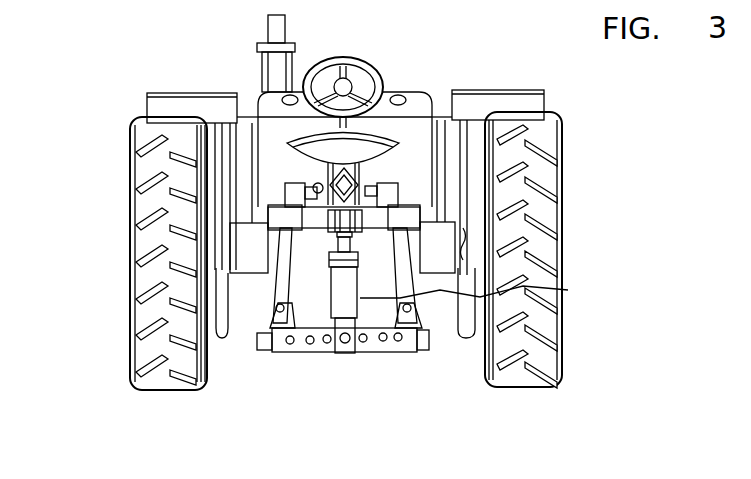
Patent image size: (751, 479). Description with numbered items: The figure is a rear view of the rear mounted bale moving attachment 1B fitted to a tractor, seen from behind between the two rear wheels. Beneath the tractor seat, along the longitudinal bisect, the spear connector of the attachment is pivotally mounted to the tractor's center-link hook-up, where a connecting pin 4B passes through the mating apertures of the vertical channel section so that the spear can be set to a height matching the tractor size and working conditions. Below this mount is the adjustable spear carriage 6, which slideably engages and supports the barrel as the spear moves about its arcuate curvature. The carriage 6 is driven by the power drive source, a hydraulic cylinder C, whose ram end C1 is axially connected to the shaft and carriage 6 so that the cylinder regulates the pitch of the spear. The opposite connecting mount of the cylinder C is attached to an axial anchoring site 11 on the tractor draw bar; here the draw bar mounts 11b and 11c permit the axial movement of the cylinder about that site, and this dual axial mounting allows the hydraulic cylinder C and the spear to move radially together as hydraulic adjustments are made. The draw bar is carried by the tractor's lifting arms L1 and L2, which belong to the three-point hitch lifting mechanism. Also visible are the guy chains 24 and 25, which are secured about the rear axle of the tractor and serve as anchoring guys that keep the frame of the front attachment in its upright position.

The rear mounted bale moving attachment 1B is at (316, 172).
The adjustable spear carriage 6 is at (312, 188).
The guy chain 24 is at (160, 238).
The guy chain 25 is at (505, 222).
The connecting pin 4B is at (368, 176).
The lifting arm L1 is at (275, 290).
The lifting arm L2 is at (357, 254).
The hydraulic cylinder C is at (360, 300).
The ram end C1 is at (478, 293).
The axial anchoring site 11 is at (333, 354).
The draw bar mount 11b is at (257, 345).
The draw bar mount 11c is at (429, 341).